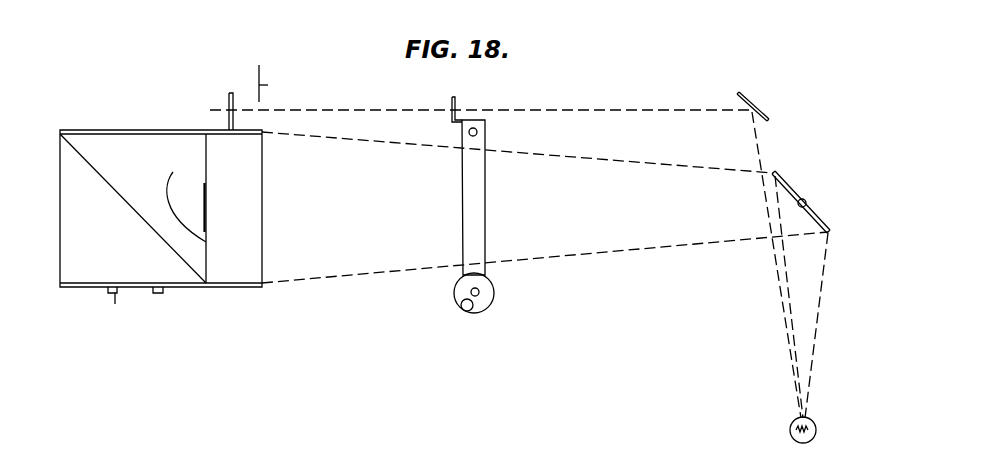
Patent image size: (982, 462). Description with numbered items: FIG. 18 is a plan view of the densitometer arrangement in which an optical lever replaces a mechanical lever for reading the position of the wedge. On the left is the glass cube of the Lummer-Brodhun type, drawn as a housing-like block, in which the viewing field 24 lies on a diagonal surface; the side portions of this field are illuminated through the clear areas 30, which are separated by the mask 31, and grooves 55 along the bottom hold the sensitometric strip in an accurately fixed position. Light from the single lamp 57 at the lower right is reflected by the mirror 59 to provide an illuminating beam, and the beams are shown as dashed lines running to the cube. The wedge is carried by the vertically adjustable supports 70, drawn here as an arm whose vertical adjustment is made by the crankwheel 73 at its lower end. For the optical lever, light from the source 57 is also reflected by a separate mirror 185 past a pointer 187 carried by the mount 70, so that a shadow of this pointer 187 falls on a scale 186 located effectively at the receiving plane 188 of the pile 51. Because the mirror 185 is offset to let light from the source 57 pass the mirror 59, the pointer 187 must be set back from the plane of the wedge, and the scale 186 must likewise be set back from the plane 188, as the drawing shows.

The viewing field 24 is at (125, 203).
The clear areas 30 is at (206, 150).
The mask 31 is at (206, 193).
The pile 51 is at (253, 249).
The grooves 55 is at (155, 295).
The lamp 57 is at (794, 424).
The mirror 59 is at (818, 215).
The supports 70 is at (462, 243).
The crankwheel 73 is at (495, 297).
The mirror 185 is at (752, 104).
The scale 186 is at (229, 100).
The pointer 187 is at (452, 99).
The receiving plane 188 is at (268, 86).